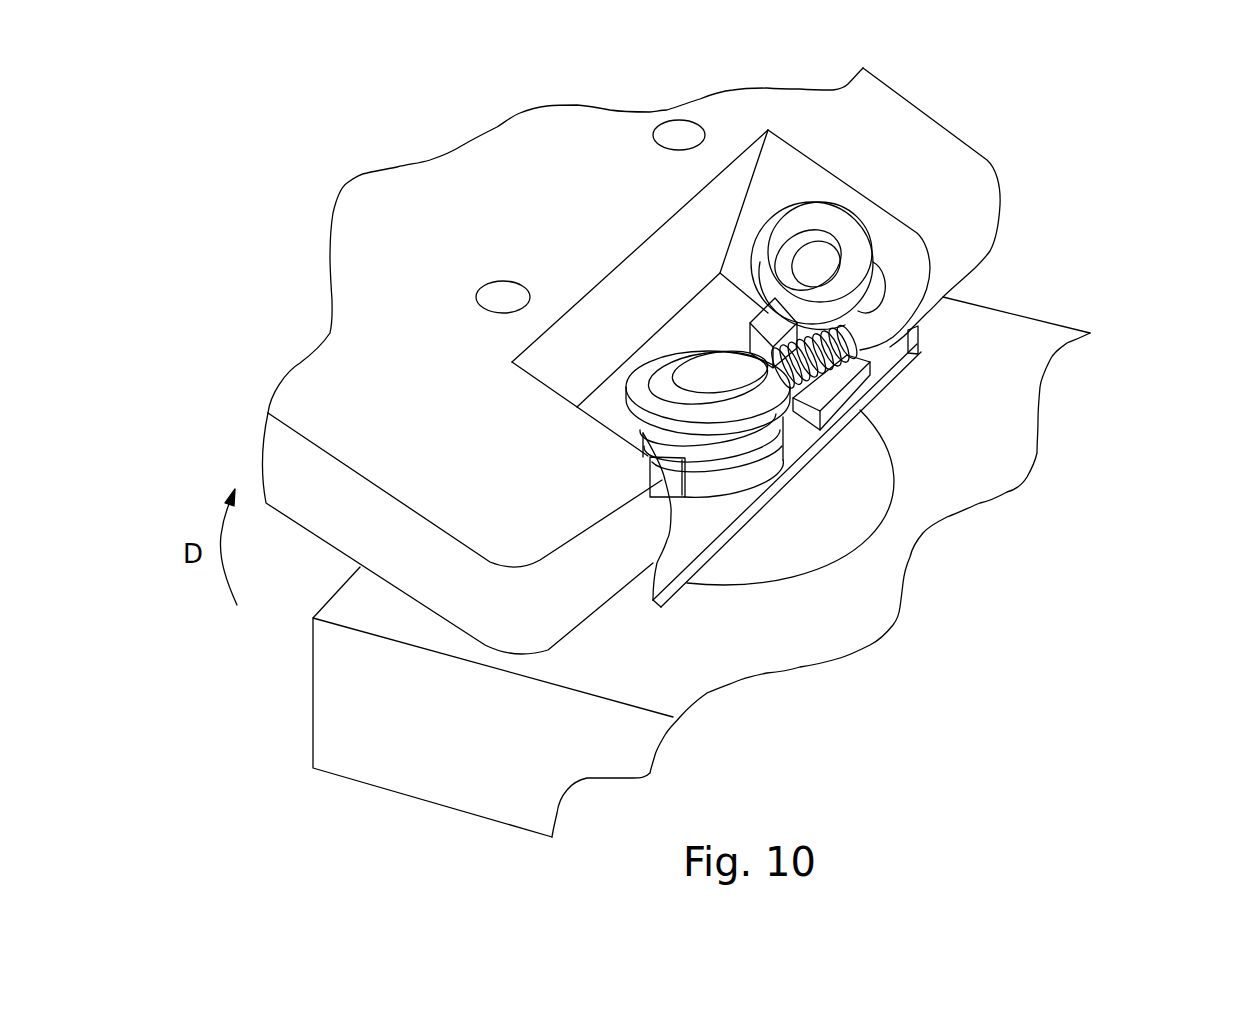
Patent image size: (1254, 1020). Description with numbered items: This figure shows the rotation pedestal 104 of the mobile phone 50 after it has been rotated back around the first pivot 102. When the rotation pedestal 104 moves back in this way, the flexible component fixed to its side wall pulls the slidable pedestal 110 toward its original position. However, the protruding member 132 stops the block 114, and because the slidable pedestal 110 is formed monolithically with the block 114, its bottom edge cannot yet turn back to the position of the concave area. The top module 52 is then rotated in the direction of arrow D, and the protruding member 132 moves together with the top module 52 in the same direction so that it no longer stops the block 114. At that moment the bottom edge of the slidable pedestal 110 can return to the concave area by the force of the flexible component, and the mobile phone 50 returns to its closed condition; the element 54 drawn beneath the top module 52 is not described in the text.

The mobile phone 50 is at (1116, 187).
The top module 52 is at (328, 372).
The support block 54 is at (437, 760).
The first pivot 102 is at (718, 390).
The rotation pedestal 104 is at (688, 533).
The slidable pedestal 110 is at (830, 377).
The block 114 is at (767, 328).
The protruding member 132 is at (780, 210).